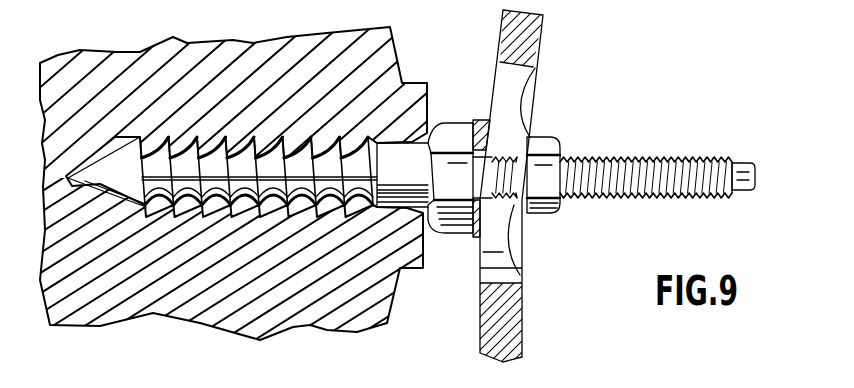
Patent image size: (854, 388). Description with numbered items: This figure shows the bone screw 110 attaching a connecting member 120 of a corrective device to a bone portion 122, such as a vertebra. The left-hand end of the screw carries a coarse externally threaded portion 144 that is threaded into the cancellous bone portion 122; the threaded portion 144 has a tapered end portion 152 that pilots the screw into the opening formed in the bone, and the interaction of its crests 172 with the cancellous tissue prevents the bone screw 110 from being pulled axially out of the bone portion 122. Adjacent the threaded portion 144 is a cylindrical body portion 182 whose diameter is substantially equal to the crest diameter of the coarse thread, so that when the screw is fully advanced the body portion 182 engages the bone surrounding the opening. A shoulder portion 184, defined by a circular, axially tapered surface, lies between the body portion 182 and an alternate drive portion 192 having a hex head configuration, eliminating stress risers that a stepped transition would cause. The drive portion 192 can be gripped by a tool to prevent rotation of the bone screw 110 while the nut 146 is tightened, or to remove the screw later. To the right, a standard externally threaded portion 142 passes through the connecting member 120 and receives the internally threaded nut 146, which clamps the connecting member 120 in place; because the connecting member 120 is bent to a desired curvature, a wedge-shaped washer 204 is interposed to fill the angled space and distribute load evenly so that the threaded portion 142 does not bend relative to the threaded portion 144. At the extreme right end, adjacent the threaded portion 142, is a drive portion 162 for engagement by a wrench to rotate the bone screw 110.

The bone screw 110 is at (477, 194).
The connecting member 120 is at (477, 194).
The bone portion 122 is at (200, 270).
The externally threaded portion 142 is at (684, 146).
The externally threaded portion 144 is at (248, 108).
The internally threaded nut 146 is at (541, 200).
The tapered end portion 152 is at (117, 170).
The drive portion 162 is at (740, 184).
The crests 172 is at (254, 137).
The cylindrical body portion 182 is at (392, 140).
The shoulder portion 184 is at (420, 232).
The alternate drive portion 192 is at (454, 112).
The washer 204 is at (492, 127).